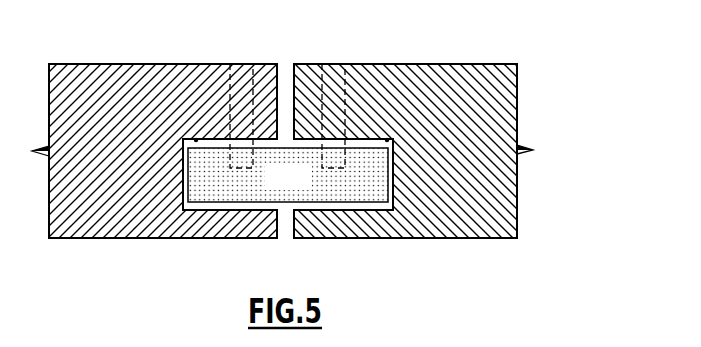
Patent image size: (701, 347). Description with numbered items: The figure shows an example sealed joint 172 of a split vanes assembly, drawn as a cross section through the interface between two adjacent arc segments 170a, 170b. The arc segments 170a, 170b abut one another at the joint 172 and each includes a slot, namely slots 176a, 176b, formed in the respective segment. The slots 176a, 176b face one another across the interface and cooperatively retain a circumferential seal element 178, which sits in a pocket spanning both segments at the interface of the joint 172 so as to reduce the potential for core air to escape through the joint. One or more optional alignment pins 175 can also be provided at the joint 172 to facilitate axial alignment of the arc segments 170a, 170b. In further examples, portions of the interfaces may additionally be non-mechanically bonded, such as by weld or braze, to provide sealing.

The arc segment 170a is at (117, 238).
The arc segment 170b is at (456, 238).
The joint 172 is at (237, 259).
The alignment pin 175 is at (316, 108).
The slot 176a is at (195, 139).
The slot 176b is at (388, 139).
The circumferential seal element 178 is at (308, 187).